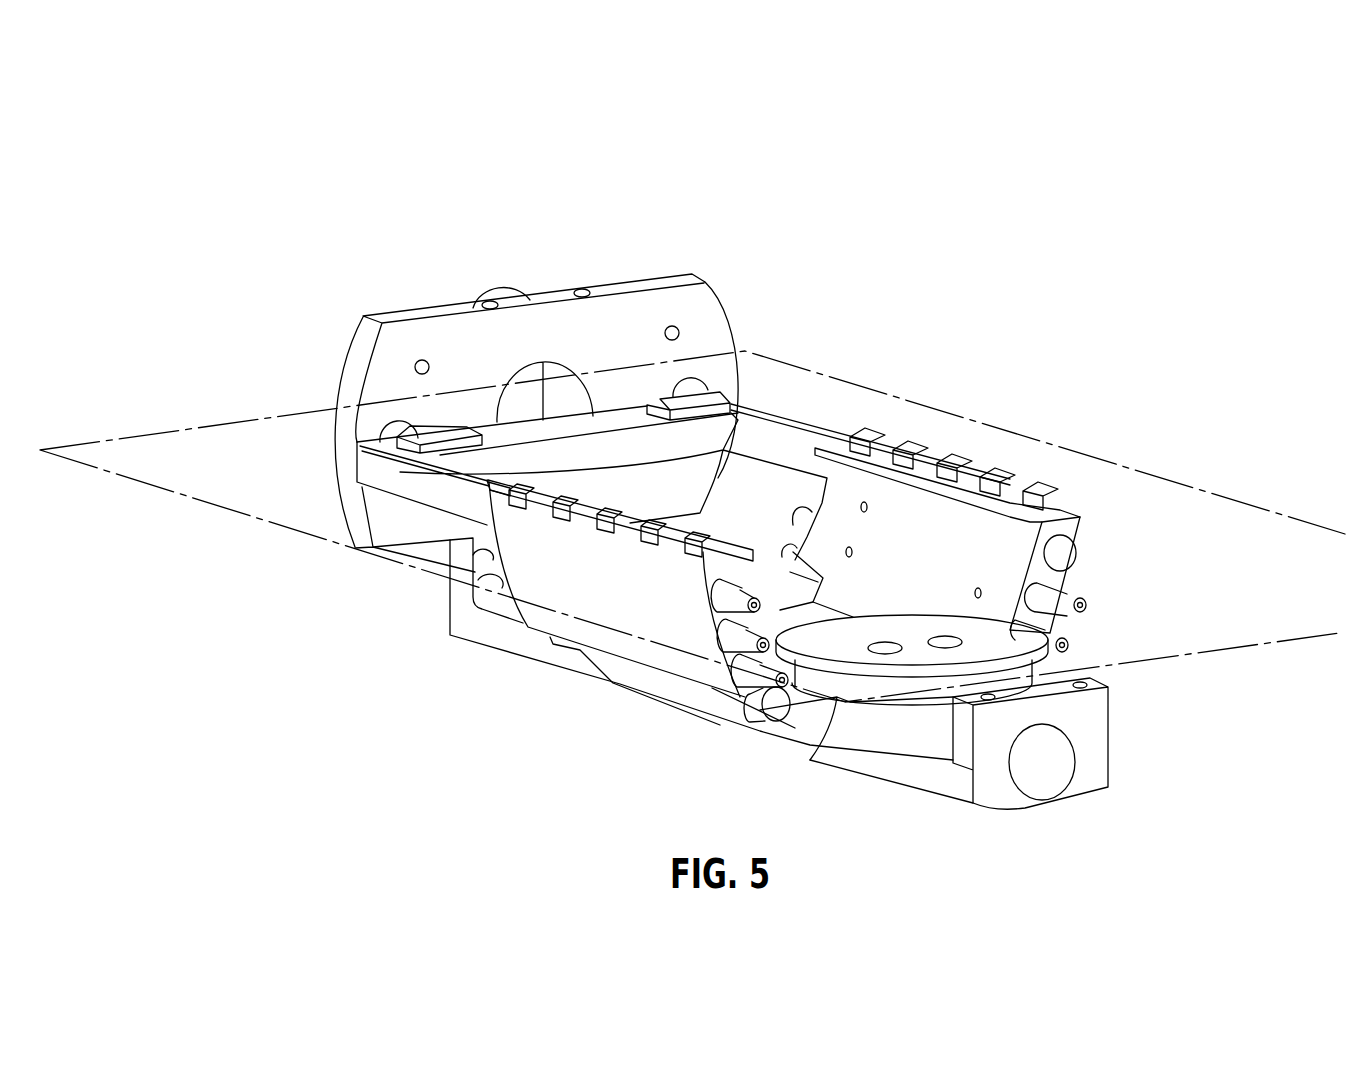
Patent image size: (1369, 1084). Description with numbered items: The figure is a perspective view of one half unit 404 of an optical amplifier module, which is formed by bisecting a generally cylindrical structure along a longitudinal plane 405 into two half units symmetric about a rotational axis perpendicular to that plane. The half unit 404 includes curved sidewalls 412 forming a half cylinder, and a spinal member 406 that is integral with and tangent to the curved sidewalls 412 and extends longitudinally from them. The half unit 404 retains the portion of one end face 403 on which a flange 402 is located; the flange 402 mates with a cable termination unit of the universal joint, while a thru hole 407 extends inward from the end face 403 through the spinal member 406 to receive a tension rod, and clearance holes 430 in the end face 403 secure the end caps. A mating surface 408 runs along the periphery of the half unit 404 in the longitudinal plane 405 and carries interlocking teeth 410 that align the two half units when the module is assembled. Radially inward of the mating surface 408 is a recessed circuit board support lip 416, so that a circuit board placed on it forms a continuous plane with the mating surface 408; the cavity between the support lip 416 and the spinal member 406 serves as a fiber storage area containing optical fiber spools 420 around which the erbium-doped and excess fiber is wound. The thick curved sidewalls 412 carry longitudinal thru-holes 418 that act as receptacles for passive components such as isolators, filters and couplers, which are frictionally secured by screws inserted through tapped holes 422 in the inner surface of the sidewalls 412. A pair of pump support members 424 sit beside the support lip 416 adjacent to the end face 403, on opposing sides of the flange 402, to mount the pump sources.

The flange 402 is at (503, 300).
The end face 403 is at (398, 340).
The half unit 404 is at (561, 160).
The longitudinal plane 405 is at (1180, 500).
The spinal member 406 is at (913, 773).
The thru hole 407 is at (1043, 788).
The mating surface 408 is at (780, 415).
The interlocking teeth 410 is at (488, 482).
The curved sidewalls 412 is at (627, 658).
The circuit board support lip 416 is at (833, 446).
The thru-holes 418 is at (765, 708).
The optical fiber spools 420 is at (847, 688).
The tapped holes 422 is at (993, 547).
The pump support members 424 is at (398, 443).
The clearance holes 430 is at (398, 420).